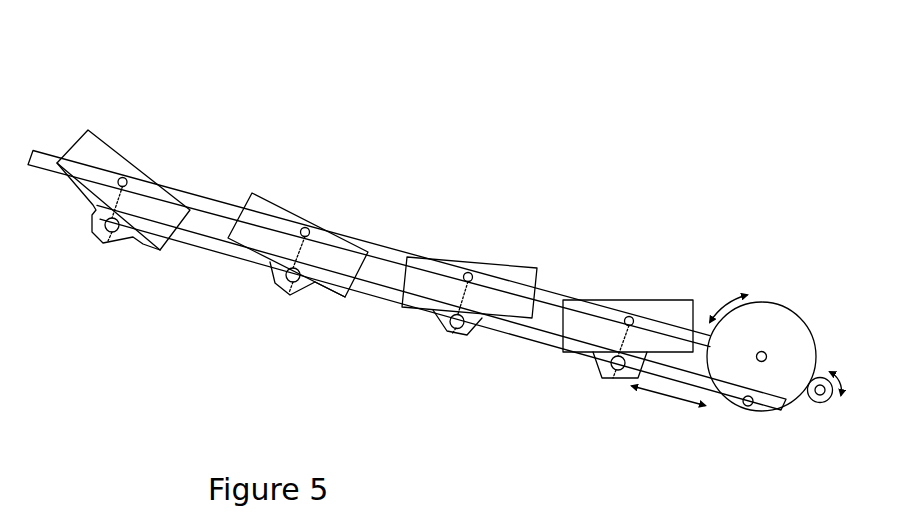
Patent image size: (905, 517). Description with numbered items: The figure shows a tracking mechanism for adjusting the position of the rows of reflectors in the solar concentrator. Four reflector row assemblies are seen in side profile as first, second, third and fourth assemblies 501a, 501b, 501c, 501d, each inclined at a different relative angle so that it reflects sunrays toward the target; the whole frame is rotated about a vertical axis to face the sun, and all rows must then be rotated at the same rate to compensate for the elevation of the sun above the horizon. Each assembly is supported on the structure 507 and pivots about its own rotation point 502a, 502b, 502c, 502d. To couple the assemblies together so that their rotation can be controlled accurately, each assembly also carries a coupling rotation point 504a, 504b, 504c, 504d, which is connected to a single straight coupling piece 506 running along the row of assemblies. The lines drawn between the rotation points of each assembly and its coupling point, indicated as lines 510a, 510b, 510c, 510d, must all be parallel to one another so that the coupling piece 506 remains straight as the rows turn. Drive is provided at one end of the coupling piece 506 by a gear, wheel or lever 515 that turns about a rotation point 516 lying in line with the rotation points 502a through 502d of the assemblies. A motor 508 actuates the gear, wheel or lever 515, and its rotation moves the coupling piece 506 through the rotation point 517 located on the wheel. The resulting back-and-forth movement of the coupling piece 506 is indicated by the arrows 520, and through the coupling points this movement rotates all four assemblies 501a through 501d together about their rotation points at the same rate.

The reflector assembly 501a is at (100, 150).
The reflector assembly 501b is at (258, 203).
The reflector assembly 501c is at (415, 273).
The reflector assembly 501d is at (575, 323).
The rotation point 502a is at (123, 177).
The rotation point 502b is at (307, 227).
The rotation point 502c is at (468, 272).
The rotation point 502d is at (629, 316).
The coupling rotation point 504a is at (103, 243).
The coupling rotation point 504b is at (288, 285).
The coupling rotation point 504c is at (450, 335).
The coupling rotation point 504d is at (618, 370).
The coupling piece 506 is at (560, 348).
The structure 507 is at (43, 150).
The motor 508 is at (818, 403).
The line between rotation points 510a is at (117, 200).
The line between rotation points 510b is at (303, 255).
The line between rotation points 510c is at (462, 303).
The line between rotation points 510d is at (616, 357).
The gear/wheel or lever 515 is at (748, 322).
The rotation point 516 is at (762, 352).
The rotation point 517 is at (746, 406).
The arrows 520 is at (670, 394).